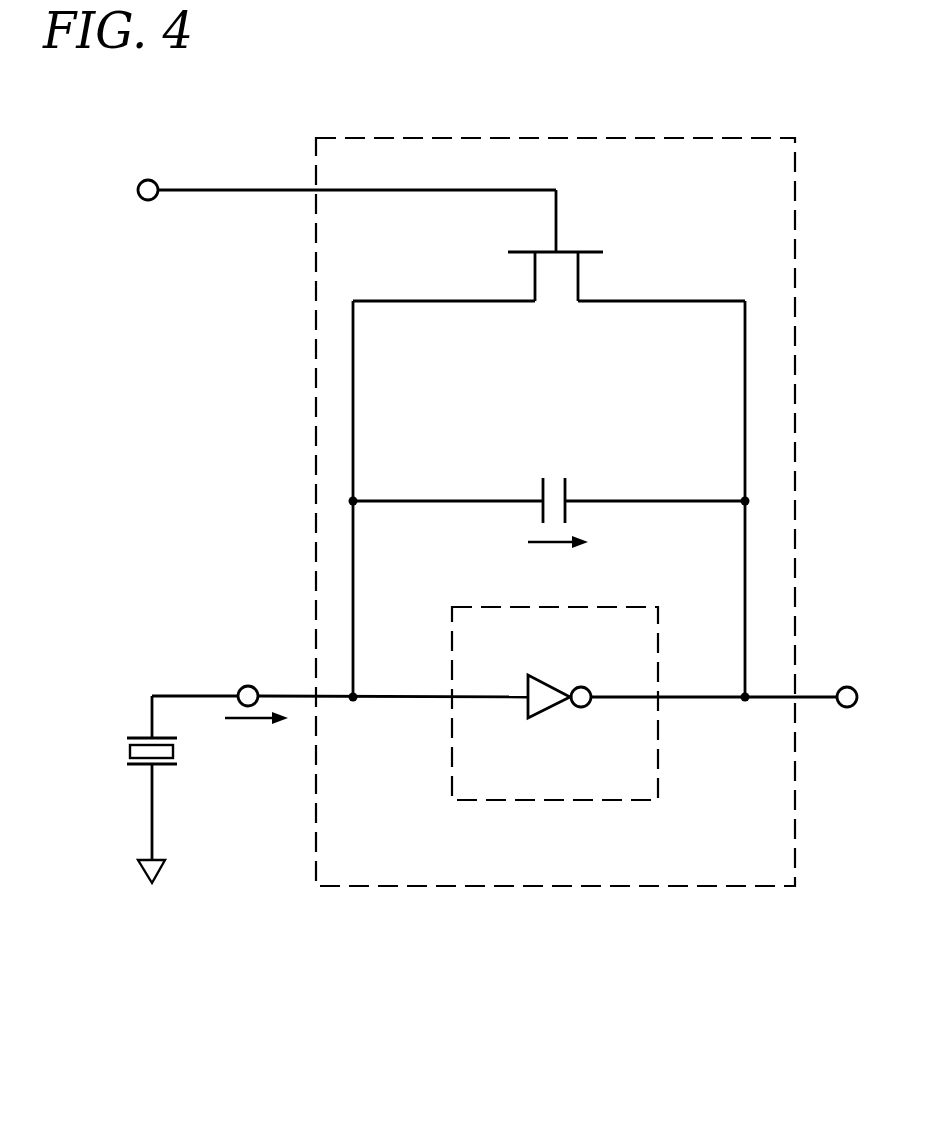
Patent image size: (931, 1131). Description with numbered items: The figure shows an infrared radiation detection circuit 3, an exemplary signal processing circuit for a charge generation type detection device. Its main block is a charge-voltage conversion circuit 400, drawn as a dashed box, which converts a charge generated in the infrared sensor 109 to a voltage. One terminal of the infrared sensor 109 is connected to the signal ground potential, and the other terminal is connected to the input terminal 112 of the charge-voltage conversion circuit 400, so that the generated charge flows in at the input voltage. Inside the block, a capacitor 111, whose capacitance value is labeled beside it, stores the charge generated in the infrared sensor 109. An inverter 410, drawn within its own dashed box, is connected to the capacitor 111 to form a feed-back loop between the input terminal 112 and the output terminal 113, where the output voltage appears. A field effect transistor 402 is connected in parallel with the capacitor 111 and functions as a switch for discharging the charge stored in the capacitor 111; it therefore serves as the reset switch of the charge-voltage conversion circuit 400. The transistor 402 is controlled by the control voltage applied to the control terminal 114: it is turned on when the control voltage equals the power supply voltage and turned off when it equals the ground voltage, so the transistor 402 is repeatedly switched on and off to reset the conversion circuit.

The infrared radiation detection circuit 3 is at (394, 920).
The charge-voltage conversion circuit 400 is at (458, 138).
The FET 402 is at (572, 250).
The capacitor 111 is at (541, 490).
The inverter 410 is at (552, 683).
The input terminal 112 is at (240, 688).
The output terminal 113 is at (848, 686).
The control terminal 114 is at (148, 180).
The infrared sensor 109 is at (128, 748).